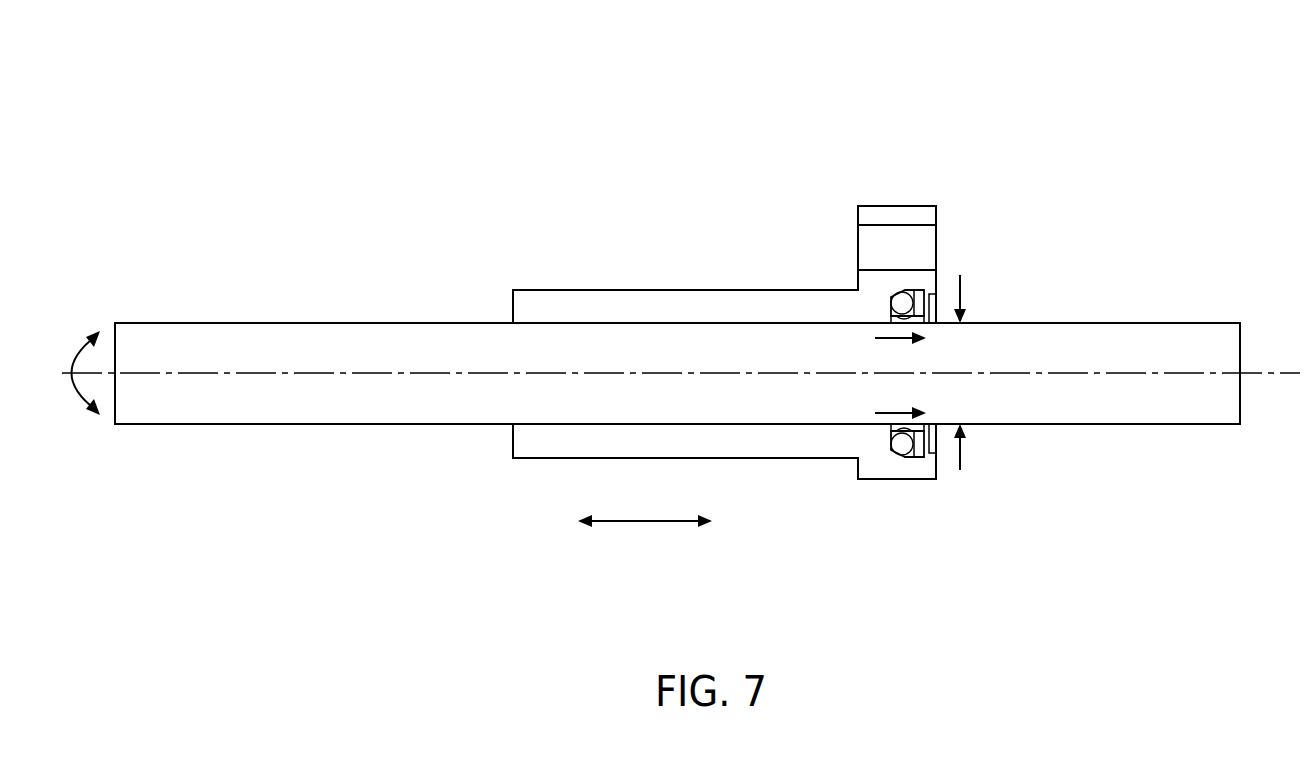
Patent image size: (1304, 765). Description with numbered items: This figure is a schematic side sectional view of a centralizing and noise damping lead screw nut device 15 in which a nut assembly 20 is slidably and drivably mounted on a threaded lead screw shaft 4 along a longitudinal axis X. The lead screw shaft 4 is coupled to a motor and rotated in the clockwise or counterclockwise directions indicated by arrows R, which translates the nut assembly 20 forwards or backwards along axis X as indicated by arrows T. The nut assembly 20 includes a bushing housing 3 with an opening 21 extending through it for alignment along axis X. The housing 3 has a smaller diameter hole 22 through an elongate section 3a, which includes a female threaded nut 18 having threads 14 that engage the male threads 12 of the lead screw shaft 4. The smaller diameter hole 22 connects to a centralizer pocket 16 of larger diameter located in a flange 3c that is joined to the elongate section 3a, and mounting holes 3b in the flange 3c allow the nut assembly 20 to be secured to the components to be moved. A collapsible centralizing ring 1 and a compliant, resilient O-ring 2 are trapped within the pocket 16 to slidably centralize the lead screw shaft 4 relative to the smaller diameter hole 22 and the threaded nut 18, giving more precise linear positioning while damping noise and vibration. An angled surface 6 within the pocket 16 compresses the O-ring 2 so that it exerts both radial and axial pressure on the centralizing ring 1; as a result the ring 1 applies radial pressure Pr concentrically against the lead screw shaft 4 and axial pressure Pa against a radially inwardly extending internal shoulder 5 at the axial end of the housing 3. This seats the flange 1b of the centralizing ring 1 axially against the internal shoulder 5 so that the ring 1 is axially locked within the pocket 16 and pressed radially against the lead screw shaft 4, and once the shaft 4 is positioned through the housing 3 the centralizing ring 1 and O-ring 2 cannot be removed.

The centralizing ring 1 is at (933, 416).
The flange 1b is at (930, 453).
The O-ring 2 is at (907, 381).
The bushing housing 3 is at (899, 214).
The elongate section 3a is at (656, 290).
The mounting holes 3b is at (858, 248).
The flange 3c is at (901, 206).
The lead screw shaft 4 is at (677, 356).
The internal shoulder 5 is at (932, 296).
The angled surface 6 is at (892, 296).
The male threads 12 is at (1142, 338).
The threads 14 is at (565, 323).
The lead screw nut device 15 is at (768, 93).
The centralizer pocket 16 is at (916, 298).
The threaded nut 18 is at (614, 305).
The nut assembly 20 is at (1023, 178).
The opening 21 is at (568, 428).
The smaller diameter hole 22 is at (553, 289).
The rotation arrows R is at (74, 356).
The longitudinal axis X is at (1292, 372).
The axial pressure Pa is at (901, 341).
The radial pressure Pr is at (963, 292).
The translation arrows T is at (643, 524).